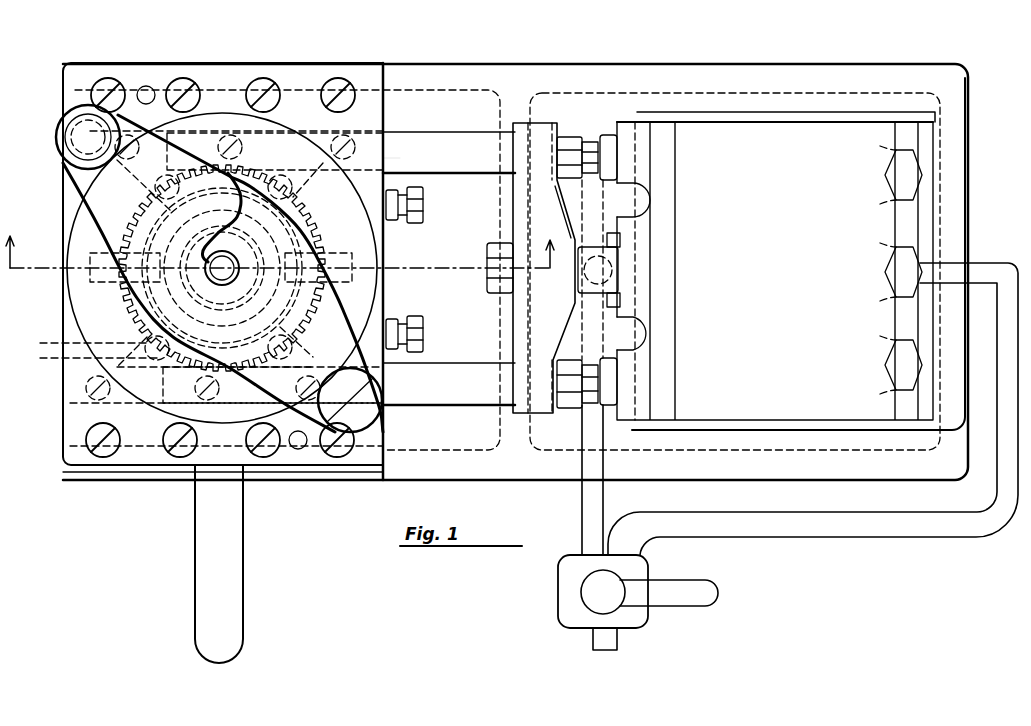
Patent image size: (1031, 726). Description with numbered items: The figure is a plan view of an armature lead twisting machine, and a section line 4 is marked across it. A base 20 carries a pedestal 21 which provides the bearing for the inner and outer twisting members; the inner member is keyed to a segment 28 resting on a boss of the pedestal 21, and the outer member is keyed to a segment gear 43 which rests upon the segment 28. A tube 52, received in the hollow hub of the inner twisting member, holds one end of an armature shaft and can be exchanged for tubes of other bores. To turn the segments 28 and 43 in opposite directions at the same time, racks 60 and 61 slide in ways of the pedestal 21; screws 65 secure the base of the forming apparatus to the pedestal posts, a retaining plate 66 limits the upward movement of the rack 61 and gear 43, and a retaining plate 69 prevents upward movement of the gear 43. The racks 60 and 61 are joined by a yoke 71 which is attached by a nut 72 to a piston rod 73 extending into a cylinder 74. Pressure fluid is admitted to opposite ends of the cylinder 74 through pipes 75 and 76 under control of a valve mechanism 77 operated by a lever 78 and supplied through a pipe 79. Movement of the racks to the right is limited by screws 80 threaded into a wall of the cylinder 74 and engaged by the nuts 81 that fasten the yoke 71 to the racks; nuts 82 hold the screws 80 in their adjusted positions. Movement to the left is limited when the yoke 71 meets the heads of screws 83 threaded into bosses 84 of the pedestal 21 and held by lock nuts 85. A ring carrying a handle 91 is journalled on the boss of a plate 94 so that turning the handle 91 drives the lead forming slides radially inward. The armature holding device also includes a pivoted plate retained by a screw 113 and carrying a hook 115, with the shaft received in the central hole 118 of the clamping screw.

The section line 4- 4 is at (278, 241).
The base 20 is at (538, 64).
The pedestal 21 is at (393, 74).
The segment 28 is at (85, 342).
The segment gear 43 is at (137, 206).
The tube 52 is at (230, 257).
The rack 60 is at (465, 407).
The rack 61 is at (447, 130).
The screws 65 is at (262, 78).
The retaining plate 66 is at (386, 159).
The retaining plate 69 is at (90, 358).
The yoke 71 is at (513, 326).
The nut 72 is at (487, 262).
The piston rod 73 is at (590, 246).
The cylinder 74 is at (775, 125).
The pipe 75 is at (581, 520).
The pipe 76 is at (724, 511).
The valve mechanism 77 is at (557, 588).
The lever 78 is at (722, 593).
The pipe 79 is at (618, 642).
The screws 80 is at (591, 140).
The nuts 81 is at (566, 135).
The nuts 82 is at (611, 133).
The screws 83 is at (425, 205).
The bosses 84 is at (360, 230).
The lock nuts 85 is at (392, 222).
The handle 91 is at (238, 565).
The plate 94 is at (283, 128).
The screw 113 is at (373, 415).
The hook 115 is at (60, 113).
The central hole 118 is at (221, 286).